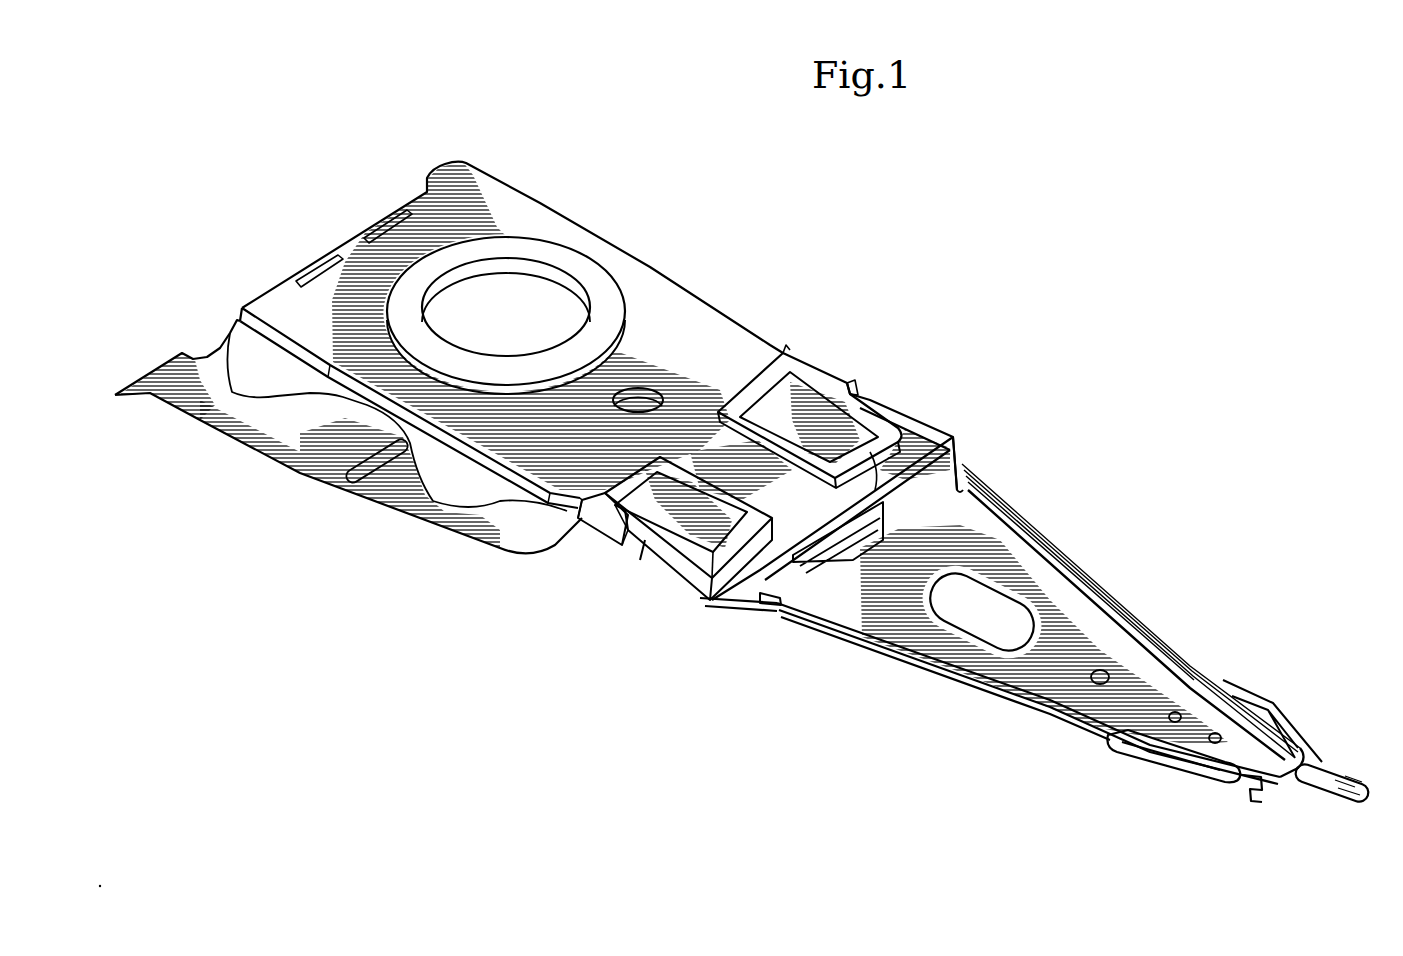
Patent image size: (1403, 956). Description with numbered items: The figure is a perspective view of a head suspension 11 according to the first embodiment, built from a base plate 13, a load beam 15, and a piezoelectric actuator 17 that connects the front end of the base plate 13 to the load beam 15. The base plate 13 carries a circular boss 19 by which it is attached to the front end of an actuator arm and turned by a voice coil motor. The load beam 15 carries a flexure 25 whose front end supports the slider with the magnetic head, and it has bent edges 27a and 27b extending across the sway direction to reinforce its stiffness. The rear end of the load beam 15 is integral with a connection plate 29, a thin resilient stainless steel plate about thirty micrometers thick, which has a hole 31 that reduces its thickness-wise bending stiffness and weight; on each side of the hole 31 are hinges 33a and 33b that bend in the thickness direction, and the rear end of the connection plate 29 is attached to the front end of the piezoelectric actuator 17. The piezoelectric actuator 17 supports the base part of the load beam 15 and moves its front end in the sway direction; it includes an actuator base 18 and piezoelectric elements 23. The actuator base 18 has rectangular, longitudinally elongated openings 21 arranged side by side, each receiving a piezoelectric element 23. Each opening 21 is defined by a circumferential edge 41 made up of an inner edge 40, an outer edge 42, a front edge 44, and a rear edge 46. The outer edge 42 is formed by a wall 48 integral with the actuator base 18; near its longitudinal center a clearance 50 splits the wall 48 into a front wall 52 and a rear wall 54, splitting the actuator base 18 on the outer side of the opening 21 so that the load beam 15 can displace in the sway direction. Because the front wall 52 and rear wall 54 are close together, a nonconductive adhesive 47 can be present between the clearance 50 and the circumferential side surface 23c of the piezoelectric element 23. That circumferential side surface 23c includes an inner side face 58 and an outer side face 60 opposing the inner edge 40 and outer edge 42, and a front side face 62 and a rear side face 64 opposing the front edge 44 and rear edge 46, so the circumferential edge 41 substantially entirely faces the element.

The head suspension 11 is at (1163, 187).
The base plate 13 is at (658, 302).
The load beam 15 is at (1077, 622).
The piezoelectric actuator 17 is at (1009, 302).
The actuator base 18 is at (650, 390).
The circular boss 19 is at (523, 271).
The opening 21 is at (782, 358).
The piezoelectric element 23 is at (800, 382).
The circumferential side surface 23c is at (832, 385).
The flexure 25 is at (1160, 775).
The bent edge 27a is at (1040, 535).
The bent edge 27b is at (952, 672).
The connection plate 29 is at (946, 468).
The hole 31 is at (795, 580).
The hinge 33a is at (968, 470).
The hinge 33b is at (762, 590).
The inner edge 40 is at (776, 457).
The circumferential edge 41 is at (733, 412).
The outer edge 42 is at (653, 565).
The front edge 44 is at (710, 542).
The rear edge 46 is at (650, 497).
The adhesive 47 is at (880, 408).
The wall 48 is at (630, 568).
The clearance 50 is at (858, 400).
The front wall 52 is at (633, 562).
The rear wall 54 is at (597, 555).
The inner side face 58 is at (806, 468).
The outer side face 60 is at (882, 408).
The front side face 62 is at (887, 455).
The rear side face 64 is at (763, 355).